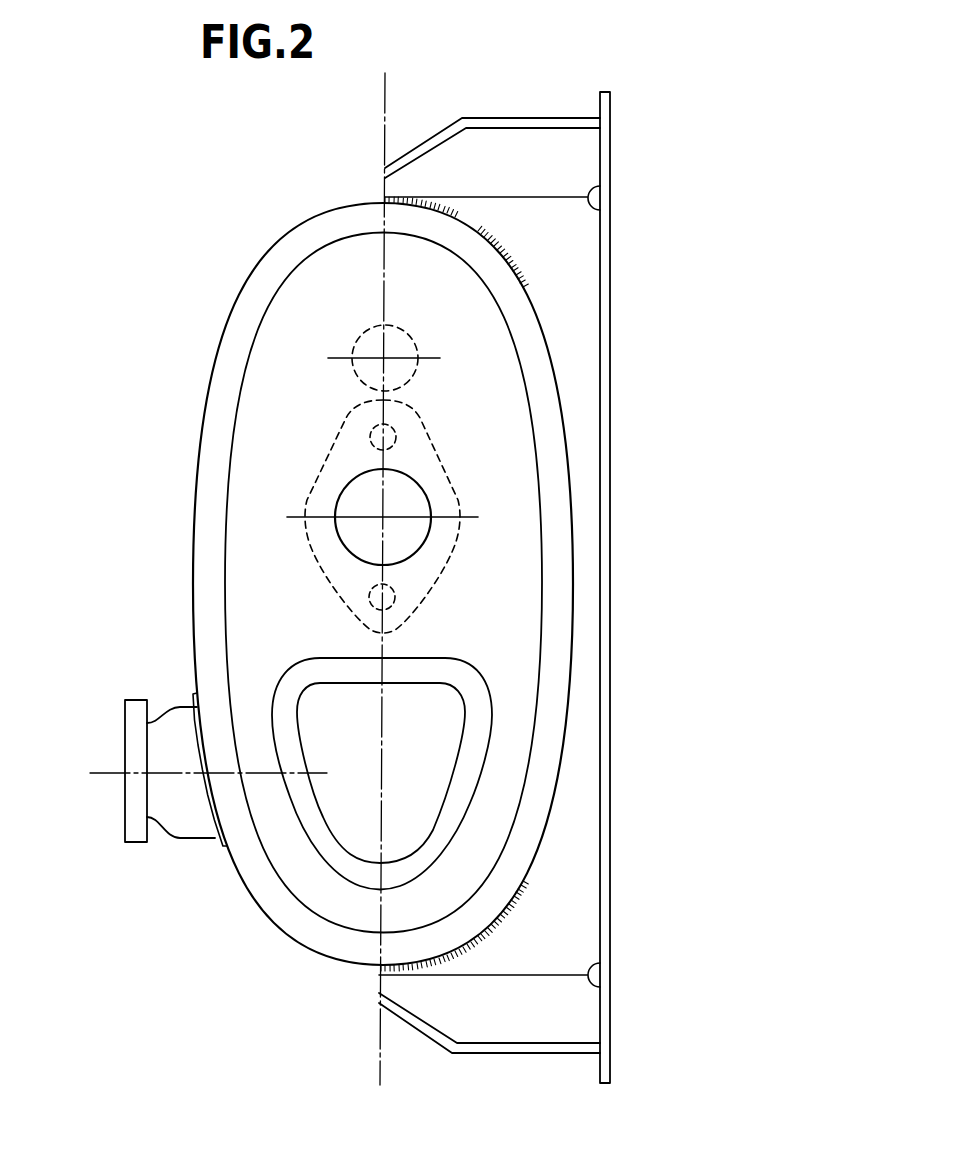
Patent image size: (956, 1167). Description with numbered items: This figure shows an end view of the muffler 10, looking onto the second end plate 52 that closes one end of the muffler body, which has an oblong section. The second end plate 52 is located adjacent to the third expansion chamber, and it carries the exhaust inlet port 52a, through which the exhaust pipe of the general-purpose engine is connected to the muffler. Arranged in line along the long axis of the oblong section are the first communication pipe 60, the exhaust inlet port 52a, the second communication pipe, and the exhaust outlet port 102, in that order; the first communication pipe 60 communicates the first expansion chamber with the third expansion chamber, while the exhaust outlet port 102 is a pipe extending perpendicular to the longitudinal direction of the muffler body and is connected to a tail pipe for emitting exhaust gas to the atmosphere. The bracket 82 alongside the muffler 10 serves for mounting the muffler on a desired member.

The muffler 10 is at (240, 231).
The second end plate 52 is at (296, 298).
The exhaust inlet port 52a is at (343, 496).
The first communication pipe 60 is at (352, 343).
The bracket 82 is at (612, 345).
The exhaust outlet port 102 is at (135, 745).